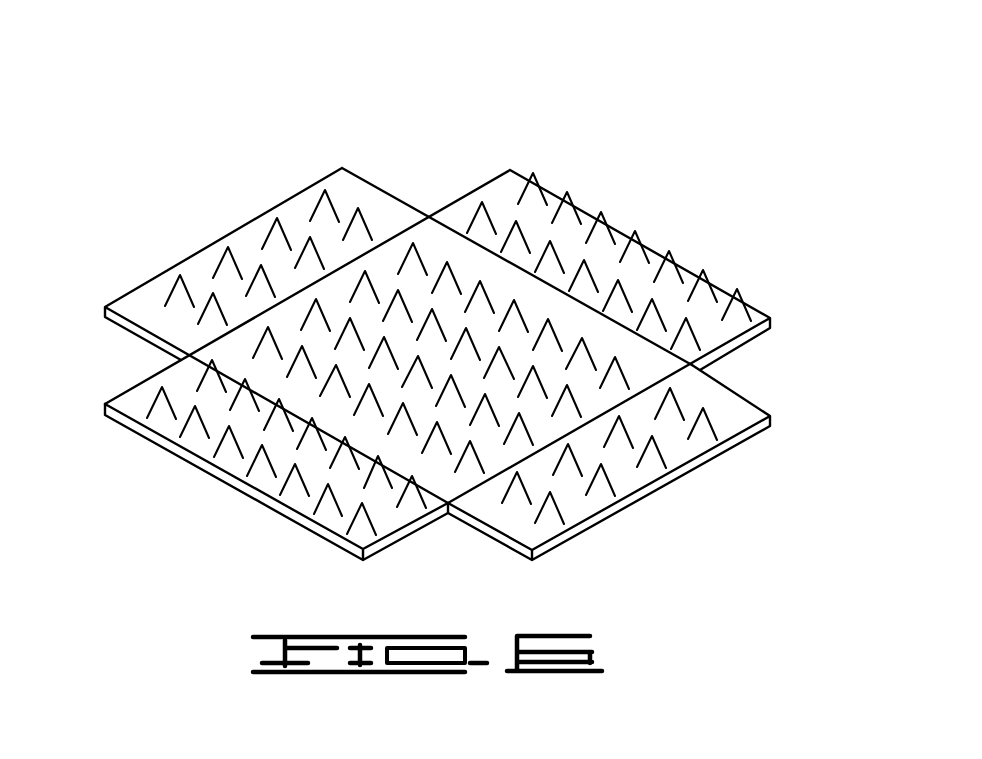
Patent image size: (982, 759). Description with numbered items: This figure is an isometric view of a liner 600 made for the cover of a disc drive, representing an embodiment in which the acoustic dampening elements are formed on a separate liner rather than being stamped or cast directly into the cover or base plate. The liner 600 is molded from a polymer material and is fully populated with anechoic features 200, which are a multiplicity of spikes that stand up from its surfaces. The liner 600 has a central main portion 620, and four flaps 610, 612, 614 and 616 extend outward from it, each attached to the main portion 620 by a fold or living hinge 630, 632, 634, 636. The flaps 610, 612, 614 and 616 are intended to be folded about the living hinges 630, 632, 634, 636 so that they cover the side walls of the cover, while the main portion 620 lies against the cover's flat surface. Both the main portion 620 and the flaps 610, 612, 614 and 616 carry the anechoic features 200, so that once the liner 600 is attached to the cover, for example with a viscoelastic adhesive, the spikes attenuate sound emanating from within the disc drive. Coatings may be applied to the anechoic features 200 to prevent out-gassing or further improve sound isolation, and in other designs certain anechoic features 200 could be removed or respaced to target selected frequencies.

The liner 600 is at (380, 116).
The flap 610 is at (458, 313).
The flap 612 is at (383, 335).
The flap 614 is at (270, 463).
The flap 616 is at (636, 474).
The main portion 620 is at (647, 373).
The living hinge 630 is at (530, 277).
The living hinge 632 is at (238, 322).
The living hinge 634 is at (247, 380).
The living hinge 636 is at (693, 455).
The anechoic features 200 is at (553, 510).